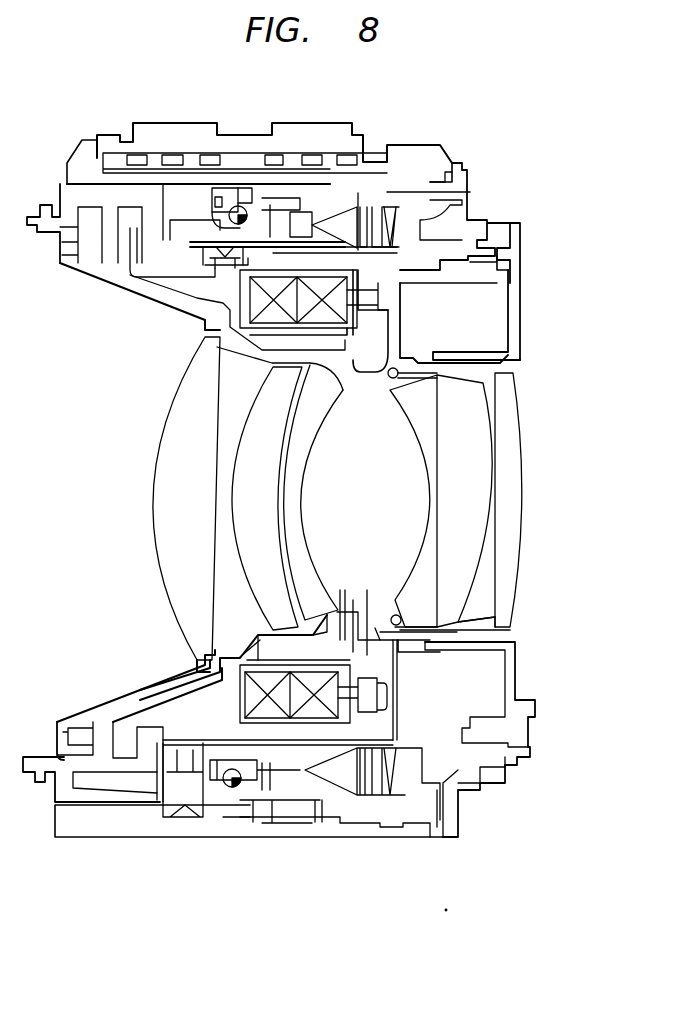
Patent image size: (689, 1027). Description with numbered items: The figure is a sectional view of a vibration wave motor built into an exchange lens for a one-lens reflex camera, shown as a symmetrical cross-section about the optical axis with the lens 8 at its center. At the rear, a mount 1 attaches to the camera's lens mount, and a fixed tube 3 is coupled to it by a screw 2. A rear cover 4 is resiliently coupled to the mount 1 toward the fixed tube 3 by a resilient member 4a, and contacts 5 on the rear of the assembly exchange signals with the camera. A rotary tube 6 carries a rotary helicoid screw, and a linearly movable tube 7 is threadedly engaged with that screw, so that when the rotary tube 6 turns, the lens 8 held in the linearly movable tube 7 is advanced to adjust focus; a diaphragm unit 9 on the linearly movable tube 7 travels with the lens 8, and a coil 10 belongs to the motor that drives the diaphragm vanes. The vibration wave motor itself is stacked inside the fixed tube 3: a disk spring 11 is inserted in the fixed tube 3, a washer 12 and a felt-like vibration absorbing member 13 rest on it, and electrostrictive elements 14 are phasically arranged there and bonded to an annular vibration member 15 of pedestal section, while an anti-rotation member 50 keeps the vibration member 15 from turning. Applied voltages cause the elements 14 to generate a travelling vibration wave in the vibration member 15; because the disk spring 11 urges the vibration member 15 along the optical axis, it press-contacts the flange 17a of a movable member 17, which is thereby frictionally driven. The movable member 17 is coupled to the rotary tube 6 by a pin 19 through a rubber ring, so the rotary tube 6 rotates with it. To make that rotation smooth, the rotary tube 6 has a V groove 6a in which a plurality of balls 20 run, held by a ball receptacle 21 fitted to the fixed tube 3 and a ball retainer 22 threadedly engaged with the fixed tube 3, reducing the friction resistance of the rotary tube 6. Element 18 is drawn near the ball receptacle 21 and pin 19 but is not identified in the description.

The mount 1 is at (520, 230).
The screw 2 is at (472, 181).
The fixed tube 3 is at (413, 147).
The rear cover 4 is at (515, 332).
The resilient member 4a is at (500, 262).
The contacts 5 is at (528, 735).
The rotary tube 6 is at (190, 235).
The V groove 6a is at (208, 218).
The linearly movable tube 7 is at (163, 260).
The lens 8 is at (480, 490).
The diaphragm unit 9 is at (400, 385).
The coil 10 is at (340, 303).
The disk spring 11 is at (397, 223).
The washer 12 is at (477, 157).
The vibration absorbing member 13 is at (413, 190).
The electrostrictive element 14 is at (388, 225).
The vibration member 15 is at (372, 233).
The movable member 17 is at (338, 228).
The flange 17a is at (348, 198).
The support plate 18 is at (328, 205).
The pin 19 is at (290, 205).
The balls 20 is at (252, 197).
The ball receptacle 21 is at (268, 203).
The ball retainer 22 is at (223, 193).
The anti-rotation member 50 is at (393, 202).